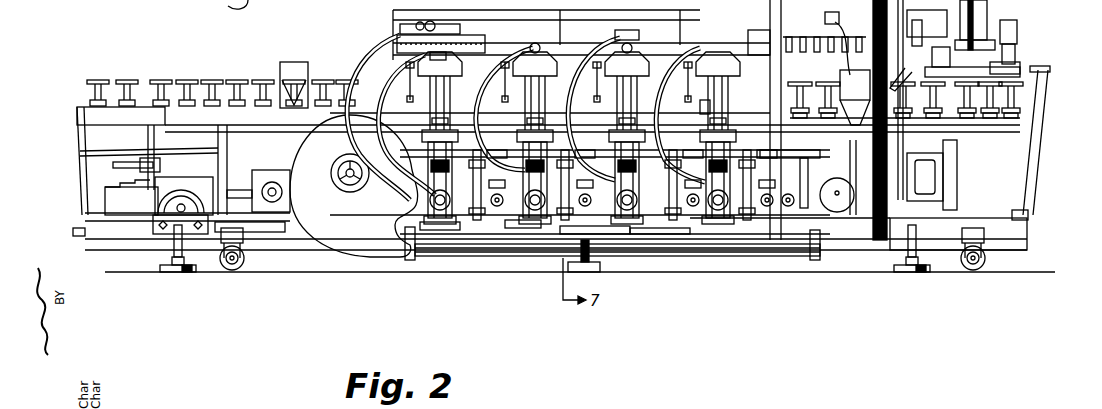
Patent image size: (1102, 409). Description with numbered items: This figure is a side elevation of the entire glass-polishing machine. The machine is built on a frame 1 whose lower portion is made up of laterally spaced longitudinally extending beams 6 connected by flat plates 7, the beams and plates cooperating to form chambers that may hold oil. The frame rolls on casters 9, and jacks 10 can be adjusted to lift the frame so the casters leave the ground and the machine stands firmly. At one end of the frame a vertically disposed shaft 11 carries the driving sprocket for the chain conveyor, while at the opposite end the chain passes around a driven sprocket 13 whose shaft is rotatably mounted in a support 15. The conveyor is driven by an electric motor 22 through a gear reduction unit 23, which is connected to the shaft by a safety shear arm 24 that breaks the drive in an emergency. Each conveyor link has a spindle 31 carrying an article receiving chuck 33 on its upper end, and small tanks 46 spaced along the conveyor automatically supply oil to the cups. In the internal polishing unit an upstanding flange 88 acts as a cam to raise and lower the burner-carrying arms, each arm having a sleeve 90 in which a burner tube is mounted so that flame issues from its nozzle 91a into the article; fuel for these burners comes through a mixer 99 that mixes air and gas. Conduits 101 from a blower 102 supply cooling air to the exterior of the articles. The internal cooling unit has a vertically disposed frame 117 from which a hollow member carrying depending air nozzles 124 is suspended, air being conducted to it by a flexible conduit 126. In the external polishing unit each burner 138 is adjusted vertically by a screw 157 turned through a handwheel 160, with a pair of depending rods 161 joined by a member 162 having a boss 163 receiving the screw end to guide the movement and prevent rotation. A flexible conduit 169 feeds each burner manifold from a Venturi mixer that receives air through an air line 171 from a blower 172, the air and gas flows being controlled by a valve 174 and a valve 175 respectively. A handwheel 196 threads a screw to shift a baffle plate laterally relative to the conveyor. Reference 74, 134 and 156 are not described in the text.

The frame 1 is at (85, 240).
The longitudinally extending beams 6 is at (274, 235).
The flat plates 7 is at (88, 212).
The casters 9 is at (233, 275).
The jacks 10 is at (178, 275).
The vertically disposed shaft 11 is at (148, 138).
The driven sprocket 13 is at (1008, 127).
The support 15 is at (985, 15).
The electric motor 22 is at (258, 184).
The gear reduction unit 23 is at (146, 207).
The safety shear arm 24 is at (118, 166).
The spindle 31 is at (95, 92).
The article receiving chuck 33 is at (162, 98).
The small tanks 46 is at (287, 70).
The fitting 74 is at (455, 61).
The upstanding flange 88 is at (943, 48).
The sleeve 90 is at (1010, 33).
The nozzle 91a is at (1013, 63).
The mixer 99 is at (800, 204).
The conduits 101 is at (1031, 160).
The blower 102 is at (835, 199).
The vertically disposed frame 117 is at (773, 18).
The air nozzles 124 is at (830, 48).
The flexible conduit 126 is at (884, 72).
The manifold 134 is at (441, 26).
The burner 138 is at (495, 48).
The filling head 156 is at (514, 99).
The screw 157 is at (698, 108).
The handwheel 160 is at (617, 128).
The depending rods 161 is at (698, 95).
The member 162 is at (447, 225).
The boss 163 is at (441, 225).
The flexible conduit 169 is at (356, 72).
The air line 171 is at (643, 241).
The blower 172 is at (368, 205).
The valve 174 is at (683, 237).
The valve 175 is at (712, 250).
The handwheel 196 is at (522, 226).